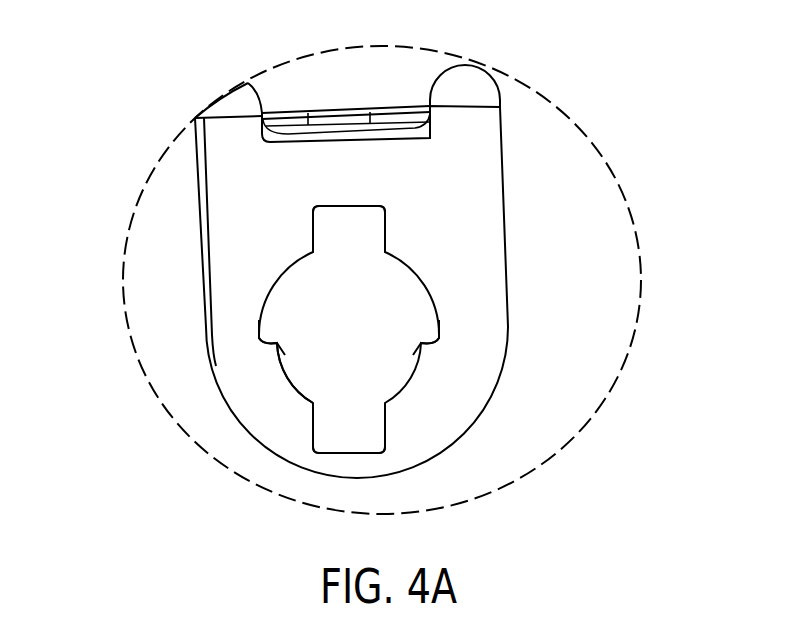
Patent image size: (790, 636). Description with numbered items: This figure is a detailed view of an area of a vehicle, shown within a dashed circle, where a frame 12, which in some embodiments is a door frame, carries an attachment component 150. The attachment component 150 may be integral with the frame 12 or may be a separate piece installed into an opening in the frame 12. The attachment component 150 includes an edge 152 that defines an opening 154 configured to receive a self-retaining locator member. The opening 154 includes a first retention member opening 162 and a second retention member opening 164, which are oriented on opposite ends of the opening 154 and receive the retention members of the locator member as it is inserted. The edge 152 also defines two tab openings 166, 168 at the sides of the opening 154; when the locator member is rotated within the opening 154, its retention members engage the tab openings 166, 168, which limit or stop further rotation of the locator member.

The frame 12 is at (593, 220).
The attachment component 150 is at (257, 265).
The edge 152 is at (296, 385).
The opening 154 is at (358, 350).
The first retention member opening 162 is at (356, 240).
The second retention member opening 164 is at (340, 421).
The tab opening 166 is at (257, 326).
The tab opening 168 is at (408, 316).